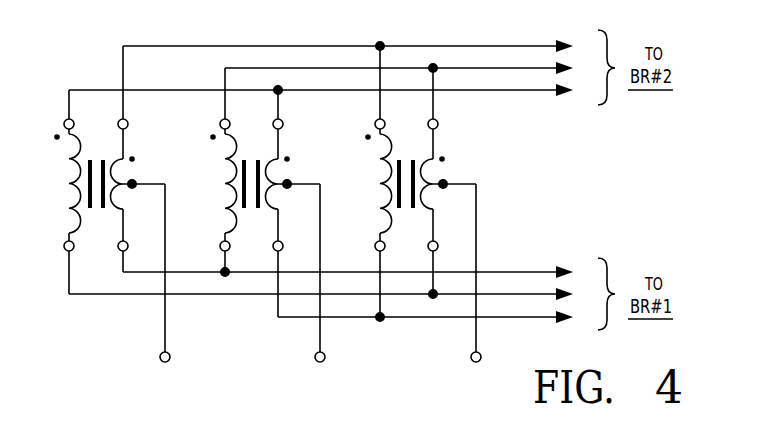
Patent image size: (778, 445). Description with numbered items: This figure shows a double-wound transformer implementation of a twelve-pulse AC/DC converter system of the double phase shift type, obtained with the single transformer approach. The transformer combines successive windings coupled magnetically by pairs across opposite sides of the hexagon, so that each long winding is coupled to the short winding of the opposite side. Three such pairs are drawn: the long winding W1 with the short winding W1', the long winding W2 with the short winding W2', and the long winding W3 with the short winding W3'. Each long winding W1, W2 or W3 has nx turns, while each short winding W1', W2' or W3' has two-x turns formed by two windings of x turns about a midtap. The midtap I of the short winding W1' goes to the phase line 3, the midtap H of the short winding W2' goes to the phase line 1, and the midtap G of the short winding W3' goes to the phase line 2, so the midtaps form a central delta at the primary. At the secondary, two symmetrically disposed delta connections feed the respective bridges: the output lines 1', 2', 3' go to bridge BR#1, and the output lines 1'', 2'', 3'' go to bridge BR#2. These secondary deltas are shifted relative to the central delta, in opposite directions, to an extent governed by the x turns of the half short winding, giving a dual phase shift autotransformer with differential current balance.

The long winding W1 is at (70, 192).
The short winding W1' is at (135, 159).
The long winding W2 is at (226, 170).
The short winding W2' is at (289, 203).
The long winding W3 is at (381, 181).
The short winding W3' is at (445, 181).
The midtap I is at (134, 183).
The midtap H is at (289, 183).
The midtap G is at (445, 183).
The phase line 1 is at (329, 360).
The phase line 2 is at (486, 360).
The phase line 3 is at (175, 360).
The output line to bridge BR#1 1' is at (434, 318).
The output line to bridge BR#1 2' is at (330, 295).
The output line to bridge BR#1 3' is at (357, 273).
The output line to bridge BR#2 1'' is at (330, 91).
The output line to bridge BR#2 2'' is at (409, 69).
The output line to bridge BR#2 3'' is at (358, 47).